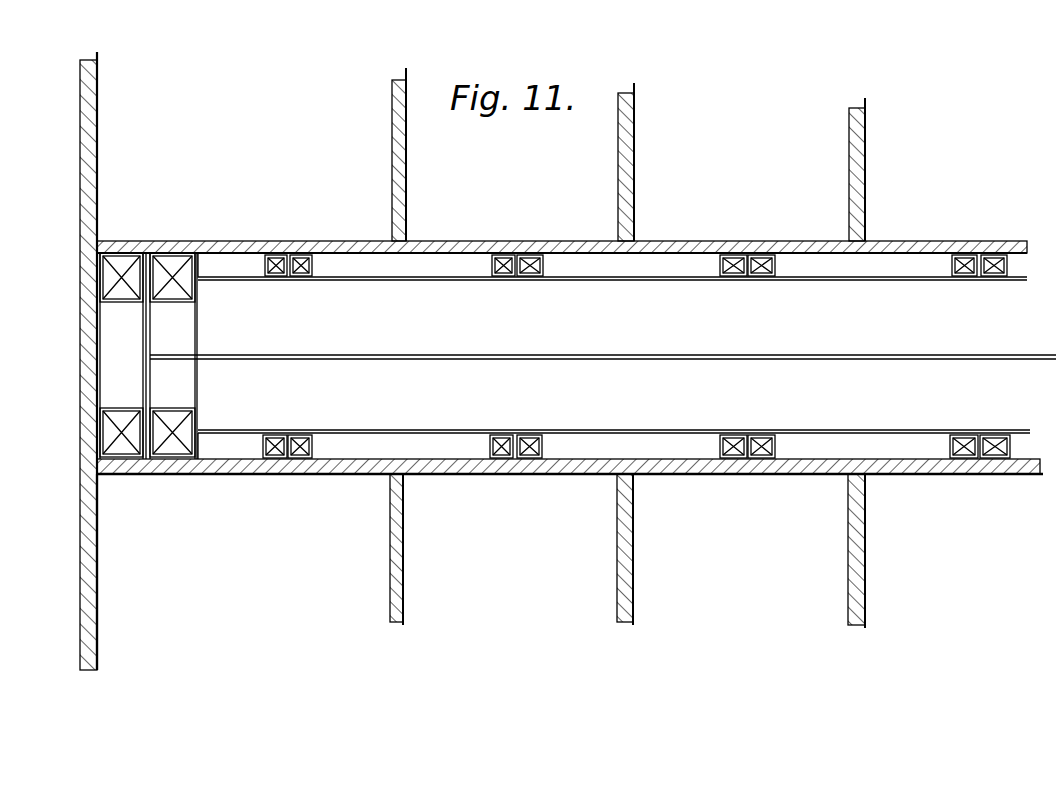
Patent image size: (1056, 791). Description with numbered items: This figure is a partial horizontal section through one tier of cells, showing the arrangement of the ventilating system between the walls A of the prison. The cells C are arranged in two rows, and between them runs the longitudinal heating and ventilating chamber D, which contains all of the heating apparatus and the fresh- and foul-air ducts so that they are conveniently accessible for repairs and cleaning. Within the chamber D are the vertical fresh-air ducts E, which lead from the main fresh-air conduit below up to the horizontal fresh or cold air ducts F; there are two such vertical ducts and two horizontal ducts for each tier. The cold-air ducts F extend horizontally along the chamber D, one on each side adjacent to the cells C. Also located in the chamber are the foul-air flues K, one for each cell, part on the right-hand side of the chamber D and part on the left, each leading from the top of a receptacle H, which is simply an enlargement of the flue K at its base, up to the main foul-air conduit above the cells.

The walls of the prison A is at (100, 136).
The cells C is at (479, 372).
The heating and ventilating chamber D is at (422, 266).
The vertical fresh-air ducts E is at (120, 248).
The horizontal fresh or cold air ducts F is at (576, 388).
The receptacle H is at (100, 532).
The foul-air flue K is at (278, 254).